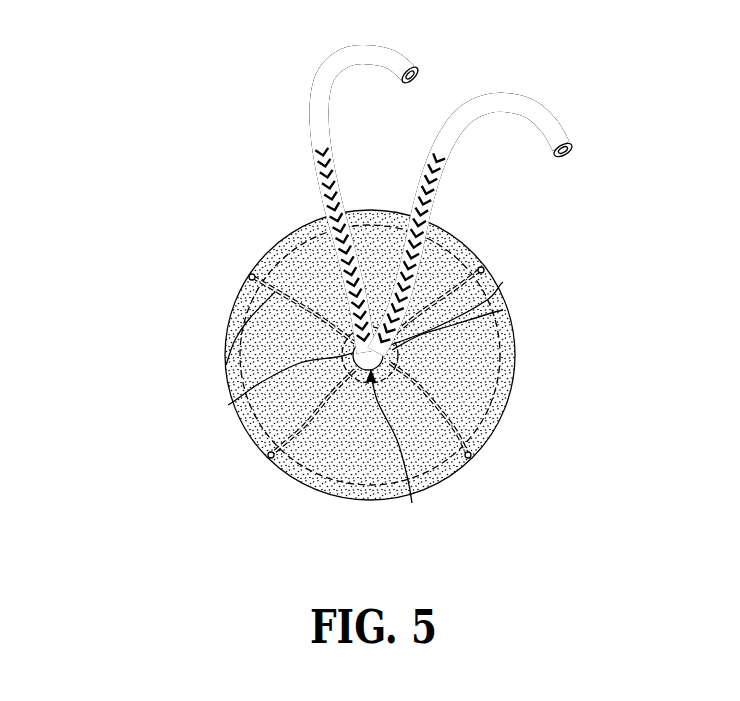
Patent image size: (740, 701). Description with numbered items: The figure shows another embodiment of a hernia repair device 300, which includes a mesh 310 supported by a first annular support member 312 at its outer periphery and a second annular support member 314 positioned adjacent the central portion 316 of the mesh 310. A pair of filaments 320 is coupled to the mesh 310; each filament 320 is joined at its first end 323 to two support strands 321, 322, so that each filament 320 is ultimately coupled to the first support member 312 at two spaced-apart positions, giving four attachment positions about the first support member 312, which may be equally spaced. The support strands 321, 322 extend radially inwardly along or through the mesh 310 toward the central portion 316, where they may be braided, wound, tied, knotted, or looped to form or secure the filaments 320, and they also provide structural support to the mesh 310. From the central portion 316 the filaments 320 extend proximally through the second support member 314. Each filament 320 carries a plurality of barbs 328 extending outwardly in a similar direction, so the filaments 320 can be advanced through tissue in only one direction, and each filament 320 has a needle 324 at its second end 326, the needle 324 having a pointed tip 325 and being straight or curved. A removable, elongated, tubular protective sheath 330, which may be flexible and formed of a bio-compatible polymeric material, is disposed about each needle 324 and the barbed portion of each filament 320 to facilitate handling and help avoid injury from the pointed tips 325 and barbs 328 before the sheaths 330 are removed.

The hernia repair device 300 is at (142, 116).
The mesh 310 is at (231, 352).
The first annular support member 312 is at (237, 427).
The second annular support member 314 is at (385, 356).
The central portion 316 is at (401, 462).
The filament 320 is at (315, 170).
The support strand 321 is at (229, 328).
The support strand 322 is at (364, 366).
The first end 323 is at (228, 405).
The needle 324 is at (338, 62).
The pointed tip 325 is at (406, 70).
The second end 326 is at (328, 145).
The barb 328 is at (321, 212).
The protective sheath 330 is at (419, 73).